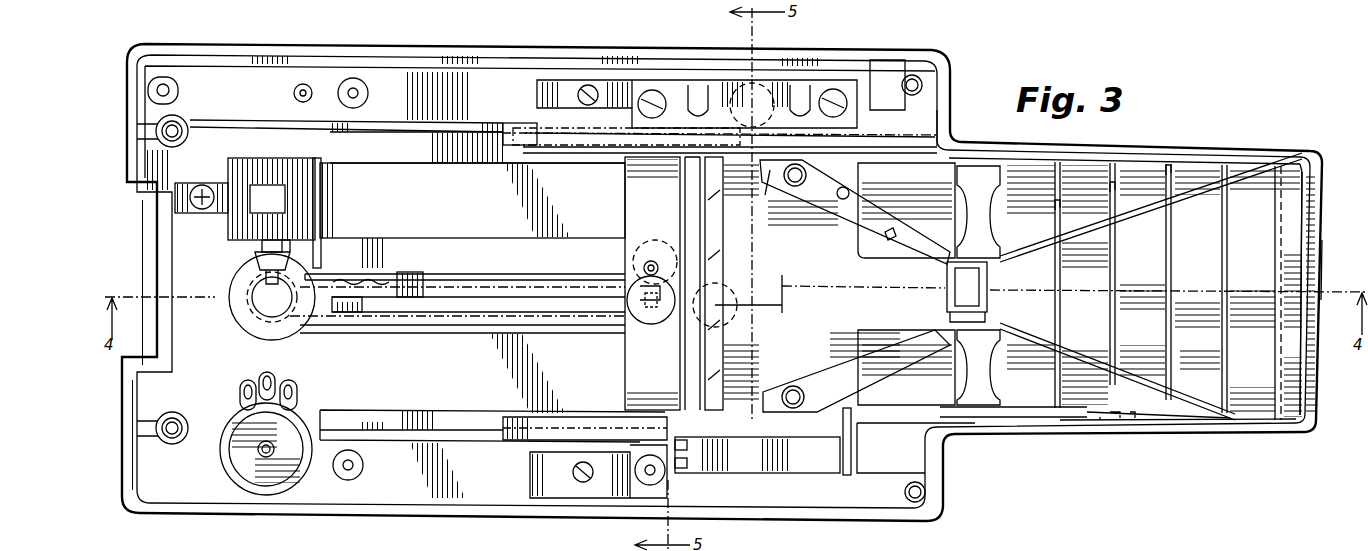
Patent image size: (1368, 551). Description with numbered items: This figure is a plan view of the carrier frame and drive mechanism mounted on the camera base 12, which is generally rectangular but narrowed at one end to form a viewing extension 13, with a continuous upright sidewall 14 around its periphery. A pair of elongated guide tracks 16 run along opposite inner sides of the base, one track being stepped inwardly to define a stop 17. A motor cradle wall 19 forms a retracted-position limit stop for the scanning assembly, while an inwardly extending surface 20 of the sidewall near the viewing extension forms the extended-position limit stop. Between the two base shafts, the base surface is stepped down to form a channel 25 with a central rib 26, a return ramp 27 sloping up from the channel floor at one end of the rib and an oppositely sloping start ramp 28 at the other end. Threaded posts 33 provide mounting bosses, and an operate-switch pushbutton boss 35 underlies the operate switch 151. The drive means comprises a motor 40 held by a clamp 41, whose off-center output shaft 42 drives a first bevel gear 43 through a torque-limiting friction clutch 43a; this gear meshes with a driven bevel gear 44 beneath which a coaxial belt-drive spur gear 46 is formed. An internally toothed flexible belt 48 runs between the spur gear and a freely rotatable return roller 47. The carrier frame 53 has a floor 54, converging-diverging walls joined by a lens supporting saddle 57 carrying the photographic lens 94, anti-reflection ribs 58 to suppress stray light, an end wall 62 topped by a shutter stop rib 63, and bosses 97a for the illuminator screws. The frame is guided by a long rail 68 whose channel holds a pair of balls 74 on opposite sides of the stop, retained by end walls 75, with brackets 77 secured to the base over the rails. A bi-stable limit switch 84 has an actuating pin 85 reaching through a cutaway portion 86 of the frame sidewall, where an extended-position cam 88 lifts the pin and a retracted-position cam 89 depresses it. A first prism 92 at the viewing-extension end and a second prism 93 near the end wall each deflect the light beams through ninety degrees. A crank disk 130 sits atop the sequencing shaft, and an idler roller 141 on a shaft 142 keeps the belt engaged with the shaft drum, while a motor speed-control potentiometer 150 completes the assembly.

The base 12 is at (535, 518).
The viewing extension 13 is at (1323, 186).
The sidewall 14 is at (480, 50).
The guide tracks 16 is at (380, 425).
The stop 17 is at (610, 128).
The wall 19 is at (322, 260).
The inwardly extending surface 20 is at (945, 140).
The channel 25 is at (530, 336).
The rib 26 is at (560, 270).
The return ramp 27 is at (362, 312).
The start ramp 28 is at (610, 298).
The posts 33 is at (385, 467).
The operate-switch pushbutton boss 35 is at (750, 83).
The motor 40 is at (228, 235).
The clamp 41 is at (285, 190).
The output shaft 42 is at (262, 247).
The first bevel gear 43 is at (256, 258).
The torque-limiting friction clutch 43a is at (292, 246).
The driven bevel gear 44 is at (265, 338).
The belt-drive spur gear 46 is at (245, 315).
The return roller 47 is at (740, 322).
The flexible belt 48 is at (448, 334).
The carrier frame 53 is at (1090, 164).
The floor 54 is at (625, 206).
The lens supporting saddle 57 is at (947, 275).
The anti-reflection ribs 58 is at (1190, 375).
The end wall 62 is at (680, 184).
The shutter stop rib 63 is at (685, 207).
The rail 68 is at (855, 147).
The balls 74 is at (775, 195).
The end walls 75 is at (915, 165).
The brackets 77 is at (530, 458).
The limit switch 84 is at (775, 473).
The actuating pin 85 is at (850, 440).
The cutaway portion 86 is at (1080, 420).
The extended-position cam 88 is at (880, 425).
The retracted-position cam 89 is at (1165, 435).
The first prism 92 is at (1324, 260).
The second prism 93 is at (723, 260).
The photographic lens 94 is at (947, 300).
The bosses 97a is at (790, 387).
The crank disk 130 is at (660, 322).
The idler roller 141 is at (653, 251).
The shaft 142 is at (645, 265).
The motor speed-control potentiometer 150 is at (227, 465).
The operate switch 151 is at (830, 80).